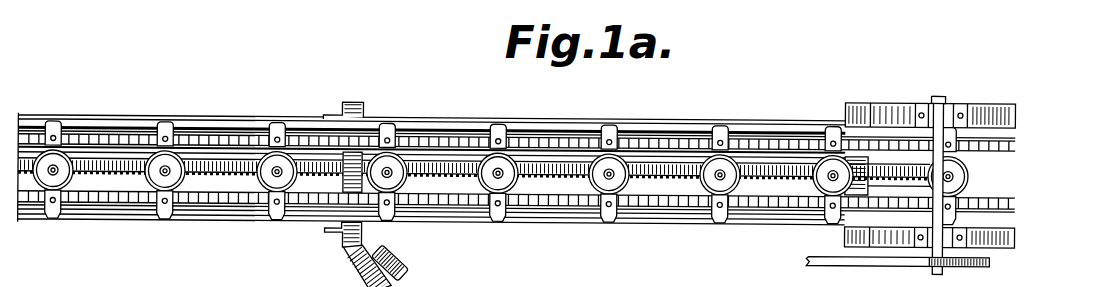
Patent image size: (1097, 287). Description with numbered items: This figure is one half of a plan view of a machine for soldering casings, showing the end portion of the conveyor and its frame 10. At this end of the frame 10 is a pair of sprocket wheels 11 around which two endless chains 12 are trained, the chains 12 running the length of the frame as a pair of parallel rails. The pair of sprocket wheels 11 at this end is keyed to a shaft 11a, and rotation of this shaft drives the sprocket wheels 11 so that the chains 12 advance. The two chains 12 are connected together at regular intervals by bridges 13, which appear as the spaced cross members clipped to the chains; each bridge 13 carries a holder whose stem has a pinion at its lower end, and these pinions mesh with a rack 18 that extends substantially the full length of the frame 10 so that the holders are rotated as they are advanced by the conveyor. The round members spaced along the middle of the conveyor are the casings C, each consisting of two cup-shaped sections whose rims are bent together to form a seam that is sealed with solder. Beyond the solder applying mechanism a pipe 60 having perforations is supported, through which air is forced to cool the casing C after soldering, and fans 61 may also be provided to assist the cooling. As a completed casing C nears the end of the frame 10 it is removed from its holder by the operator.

The endless chains 12 is at (1012, 208).
The pipe 60 is at (448, 152).
The rack 18 is at (657, 167).
The casing C is at (153, 173).
The bridges 13 is at (273, 125).
The frame 10 is at (342, 238).
The fans 61 is at (405, 269).
The shaft 11a is at (992, 258).
The sprocket wheels 11 is at (966, 266).